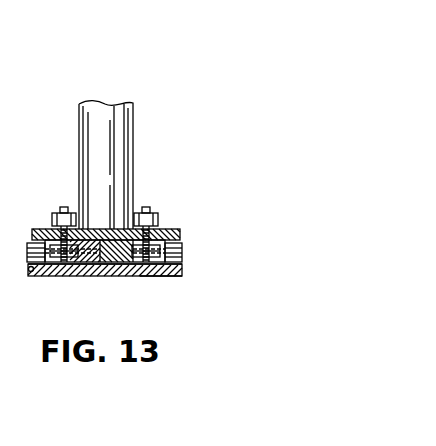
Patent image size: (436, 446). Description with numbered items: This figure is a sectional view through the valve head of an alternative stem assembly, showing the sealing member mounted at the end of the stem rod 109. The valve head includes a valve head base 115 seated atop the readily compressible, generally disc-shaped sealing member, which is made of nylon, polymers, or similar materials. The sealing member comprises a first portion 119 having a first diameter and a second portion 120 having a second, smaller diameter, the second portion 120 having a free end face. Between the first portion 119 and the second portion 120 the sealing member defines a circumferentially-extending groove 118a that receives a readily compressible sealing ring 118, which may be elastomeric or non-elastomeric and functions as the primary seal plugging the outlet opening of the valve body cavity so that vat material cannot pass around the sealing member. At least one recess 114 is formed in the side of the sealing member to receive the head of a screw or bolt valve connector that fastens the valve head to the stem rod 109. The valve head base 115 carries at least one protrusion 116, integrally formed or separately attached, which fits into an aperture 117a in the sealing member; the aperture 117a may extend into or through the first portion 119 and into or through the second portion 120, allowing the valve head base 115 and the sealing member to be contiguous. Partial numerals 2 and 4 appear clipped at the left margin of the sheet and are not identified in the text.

The stem rod 109 is at (133, 131).
The valve head base 115 is at (177, 242).
The recess 114 is at (182, 250).
The first portion 119 is at (182, 245).
The aperture 117a is at (118, 250).
The sealing ring 118 is at (178, 267).
The protrusion 116 is at (58, 281).
The second portion 120 is at (173, 276).
The circumferentially-extending groove 118a is at (163, 276).
The numeral 2 (clipped) 2 is at (4, 142).
The numeral 4 (clipped) 4 is at (2, 250).